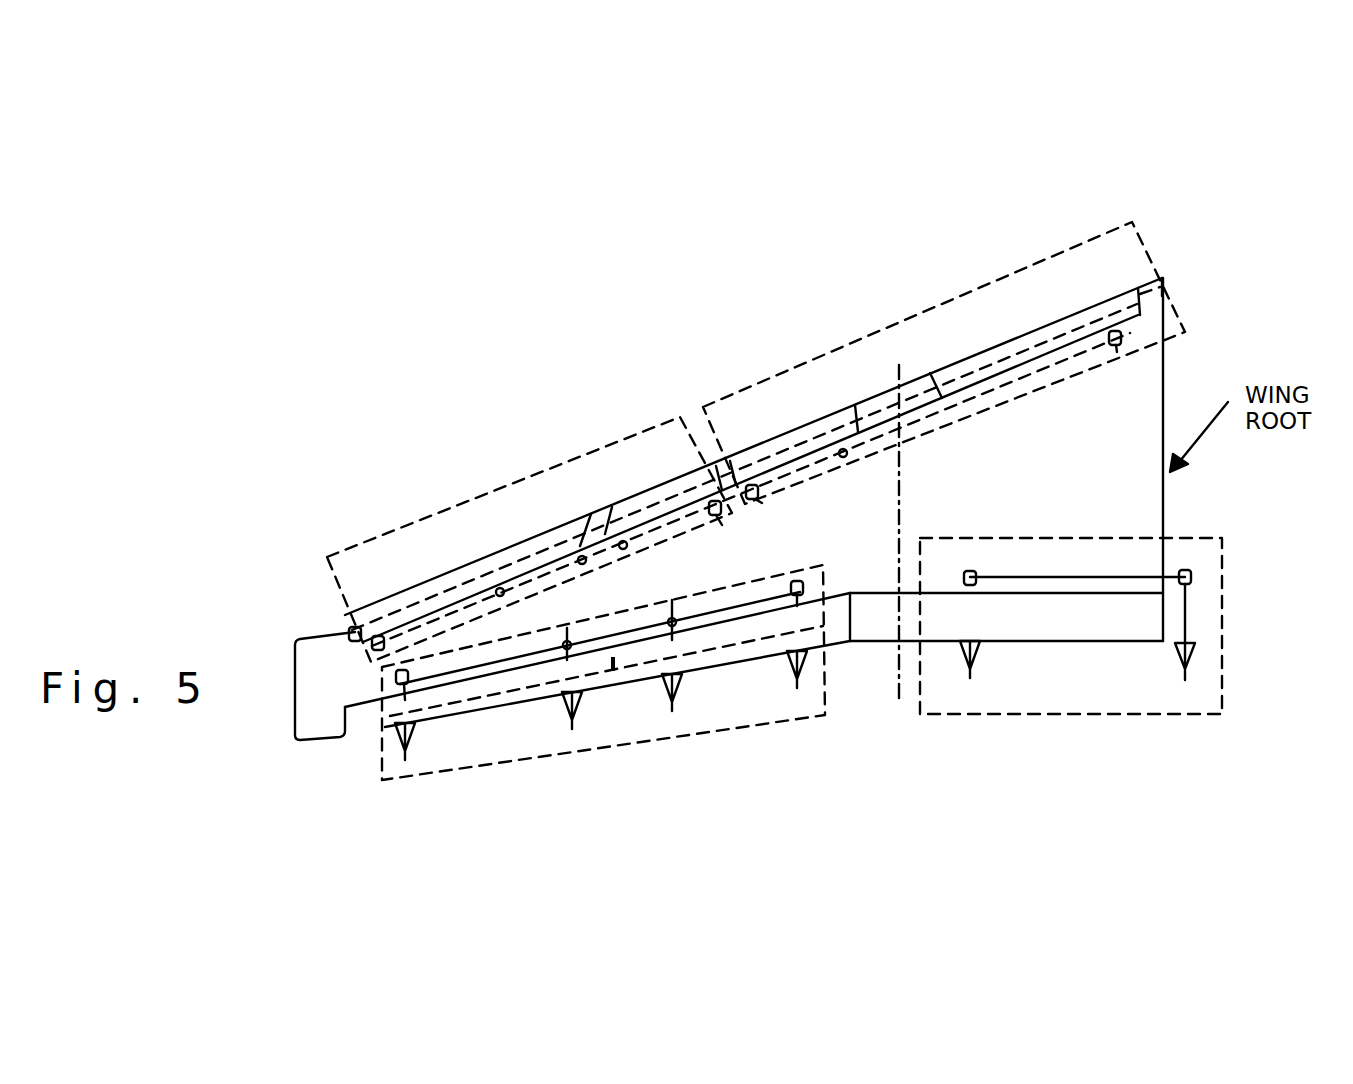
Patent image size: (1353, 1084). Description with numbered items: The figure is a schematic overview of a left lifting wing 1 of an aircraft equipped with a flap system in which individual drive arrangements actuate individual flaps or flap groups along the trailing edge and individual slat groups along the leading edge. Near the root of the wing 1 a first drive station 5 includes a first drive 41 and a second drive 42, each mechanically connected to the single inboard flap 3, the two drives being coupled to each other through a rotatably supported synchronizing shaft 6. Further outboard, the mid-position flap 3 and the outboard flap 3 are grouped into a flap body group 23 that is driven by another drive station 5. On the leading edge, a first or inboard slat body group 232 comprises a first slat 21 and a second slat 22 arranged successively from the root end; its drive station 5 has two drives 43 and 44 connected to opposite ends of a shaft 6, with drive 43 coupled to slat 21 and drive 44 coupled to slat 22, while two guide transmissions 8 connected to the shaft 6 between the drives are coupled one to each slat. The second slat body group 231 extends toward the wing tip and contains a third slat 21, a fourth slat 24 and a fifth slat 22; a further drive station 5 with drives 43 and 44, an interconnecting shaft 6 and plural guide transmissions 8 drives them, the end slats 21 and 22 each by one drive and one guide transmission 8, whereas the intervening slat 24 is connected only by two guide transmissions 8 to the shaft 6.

The lifting wing 1 is at (862, 300).
The trailing edge flap 3 is at (445, 707).
The drive station 5 is at (372, 668).
The synchronizing shaft 6 is at (1007, 384).
The guide transmission 8 is at (571, 643).
The first slat 21 is at (664, 498).
The second slat 22 is at (823, 438).
The flap body group 23 is at (500, 768).
The fourth slat 24 is at (503, 567).
The first drive 41 is at (1179, 573).
The second drive 42 is at (976, 573).
The drive 43 is at (722, 525).
The drive 44 is at (351, 631).
The second slat body group 231 is at (527, 472).
The first slat body group 232 is at (908, 318).